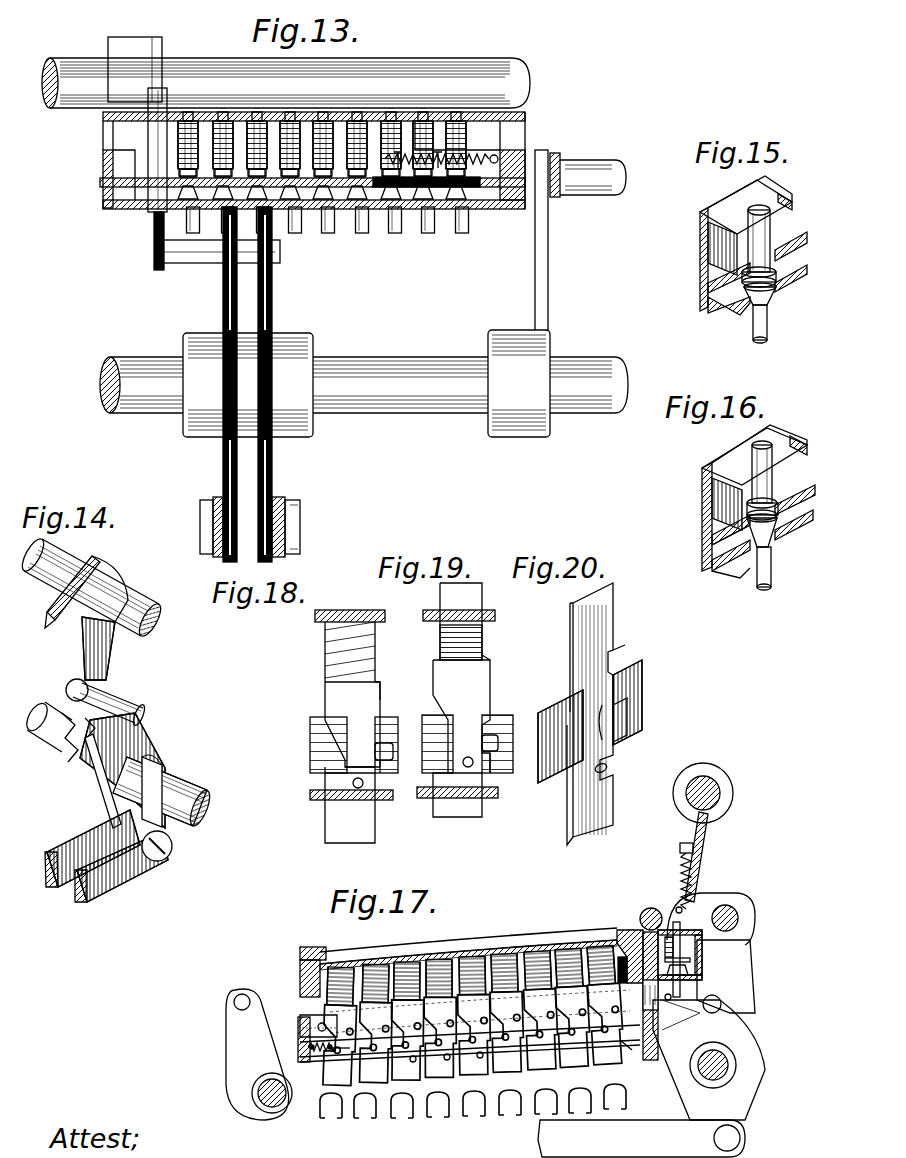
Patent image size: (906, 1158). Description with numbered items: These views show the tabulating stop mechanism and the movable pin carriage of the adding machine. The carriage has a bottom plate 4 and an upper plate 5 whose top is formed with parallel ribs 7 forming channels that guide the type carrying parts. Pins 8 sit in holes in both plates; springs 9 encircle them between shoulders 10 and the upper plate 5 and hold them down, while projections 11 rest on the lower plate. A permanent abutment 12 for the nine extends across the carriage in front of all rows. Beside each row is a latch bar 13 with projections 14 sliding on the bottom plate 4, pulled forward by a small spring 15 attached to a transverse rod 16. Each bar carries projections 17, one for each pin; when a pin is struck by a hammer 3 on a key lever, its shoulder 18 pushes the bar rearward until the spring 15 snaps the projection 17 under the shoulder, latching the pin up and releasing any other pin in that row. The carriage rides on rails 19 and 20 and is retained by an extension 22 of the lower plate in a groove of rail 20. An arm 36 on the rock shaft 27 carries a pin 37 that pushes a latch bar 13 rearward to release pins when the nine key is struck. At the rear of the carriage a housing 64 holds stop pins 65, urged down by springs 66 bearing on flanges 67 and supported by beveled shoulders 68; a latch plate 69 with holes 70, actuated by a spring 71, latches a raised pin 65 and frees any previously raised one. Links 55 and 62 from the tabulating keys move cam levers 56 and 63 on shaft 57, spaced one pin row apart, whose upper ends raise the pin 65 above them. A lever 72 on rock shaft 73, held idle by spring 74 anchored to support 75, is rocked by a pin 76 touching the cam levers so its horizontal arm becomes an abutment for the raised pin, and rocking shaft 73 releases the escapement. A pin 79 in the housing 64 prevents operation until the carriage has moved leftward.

In FIG. 17, the upward extensions 3 is at (372, 1120).
In FIG. 17, the bottom plate 4 is at (628, 1052).
In FIG. 17, the upper plate 5 is at (647, 930).
In FIG. 17, the parallel ribs 7 is at (378, 960).
In FIG. 18, the pins 8 is at (358, 618).
In FIG. 19, the pins 8 is at (470, 600).
In FIG. 20, the pins 8 is at (592, 630).
In FIG. 17, the pins 8 is at (355, 1090).
In FIG. 17, the springs 9 is at (472, 980).
In FIG. 18, the shoulders 10 is at (382, 698).
In FIG. 19, the shoulders 10 is at (487, 662).
In FIG. 20, the shoulders 10 is at (617, 652).
In FIG. 17, the shoulders 10 is at (617, 934).
In FIG. 18, the projections 11 is at (356, 788).
In FIG. 19, the projections 11 is at (470, 768).
In FIG. 20, the projections 11 is at (610, 770).
In FIG. 17, the projections 11 is at (448, 1064).
In FIG. 17, the permanent piece or abutment 12 is at (312, 948).
In FIG. 18, the latch bar or plate 13 is at (312, 722).
In FIG. 19, the latch bar or plate 13 is at (433, 718).
In FIG. 20, the latch bar or plate 13 is at (645, 690).
In FIG. 17, the latch bar or plate 13 is at (305, 1012).
In FIG. 17, the projections 14 is at (600, 1045).
In FIG. 17, the spring 15 is at (335, 1080).
In FIG. 17, the rod 16 is at (300, 1050).
In FIG. 18, the pins or projections 17 is at (388, 775).
In FIG. 19, the pins or projections 17 is at (498, 773).
In FIG. 20, the pins or projections 17 is at (625, 715).
In FIG. 17, the pins or projections 17 is at (671, 998).
In FIG. 18, the shoulders 18 is at (376, 752).
In FIG. 19, the shoulders 18 is at (490, 735).
In FIG. 20, the shoulders 18 is at (606, 740).
In FIG. 17, the rail 19 is at (648, 1062).
In FIG. 17, the rail 20 is at (298, 1038).
In FIG. 17, the extension of the lower plate 22 is at (315, 1052).
In FIG. 17, the rock shaft 27 is at (258, 1095).
In FIG. 17, the arm 36 is at (228, 1044).
In FIG. 17, the pin 37 is at (234, 1002).
In FIG. 13, the link 55 is at (213, 562).
In FIG. 14, the link 55 is at (122, 873).
In FIG. 17, the link 55 is at (641, 1138).
In FIG. 13, the cam lever 56 is at (223, 466).
In FIG. 14, the cam lever 56 is at (163, 828).
In FIG. 17, the cam lever 56 is at (748, 1112).
In FIG. 13, the shaft 57 is at (364, 383).
In FIG. 14, the shaft 57 is at (178, 792).
In FIG. 17, the shaft 57 is at (737, 1068).
In FIG. 13, the link 62 is at (282, 500).
In FIG. 14, the link 62 is at (58, 850).
In FIG. 13, the cam lever 63 is at (273, 466).
In FIG. 14, the cam lever 63 is at (100, 808).
In FIG. 13, the frame or housing 64 is at (527, 116).
In FIG. 15, the frame or housing 64 is at (700, 238).
In FIG. 16, the frame or housing 64 is at (723, 462).
In FIG. 17, the frame or housing 64 is at (702, 960).
In FIG. 13, the pins 65 is at (427, 112).
In FIG. 15, the pins 65 is at (758, 210).
In FIG. 16, the pins 65 is at (767, 443).
In FIG. 17, the pins 65 is at (680, 900).
In FIG. 13, the springs 66 is at (293, 112).
In FIG. 17, the springs 66 is at (702, 940).
In FIG. 13, the ribs or flanges 67 is at (183, 168).
In FIG. 15, the ribs or flanges 67 is at (772, 272).
In FIG. 16, the ribs or flanges 67 is at (780, 503).
In FIG. 17, the ribs or flanges 67 is at (677, 960).
In FIG. 13, the shoulders 68 is at (182, 208).
In FIG. 15, the shoulders 68 is at (772, 305).
In FIG. 16, the shoulders 68 is at (773, 557).
In FIG. 17, the shoulders 68 is at (690, 985).
In FIG. 13, the latch plate 69 is at (500, 188).
In FIG. 15, the latch plate 69 is at (725, 282).
In FIG. 16, the latch plate 69 is at (733, 538).
In FIG. 17, the latch plate 69 is at (760, 978).
In FIG. 13, the holes 70 is at (352, 233).
In FIG. 13, the spring 71 is at (490, 156).
In FIG. 13, the lever 72 is at (155, 66).
In FIG. 14, the lever 72 is at (50, 615).
In FIG. 17, the lever 72 is at (750, 905).
In FIG. 13, the rock shaft 73 is at (66, 60).
In FIG. 14, the rock shaft 73 is at (160, 624).
In FIG. 17, the rock shaft 73 is at (740, 910).
In FIG. 17, the spring 74 is at (704, 866).
In FIG. 17, the support 75 is at (680, 848).
In FIG. 13, the pin 76 is at (196, 264).
In FIG. 14, the pin 76 is at (148, 713).
In FIG. 17, the pin 76 is at (716, 1012).
In FIG. 13, the pin 79 is at (160, 188).